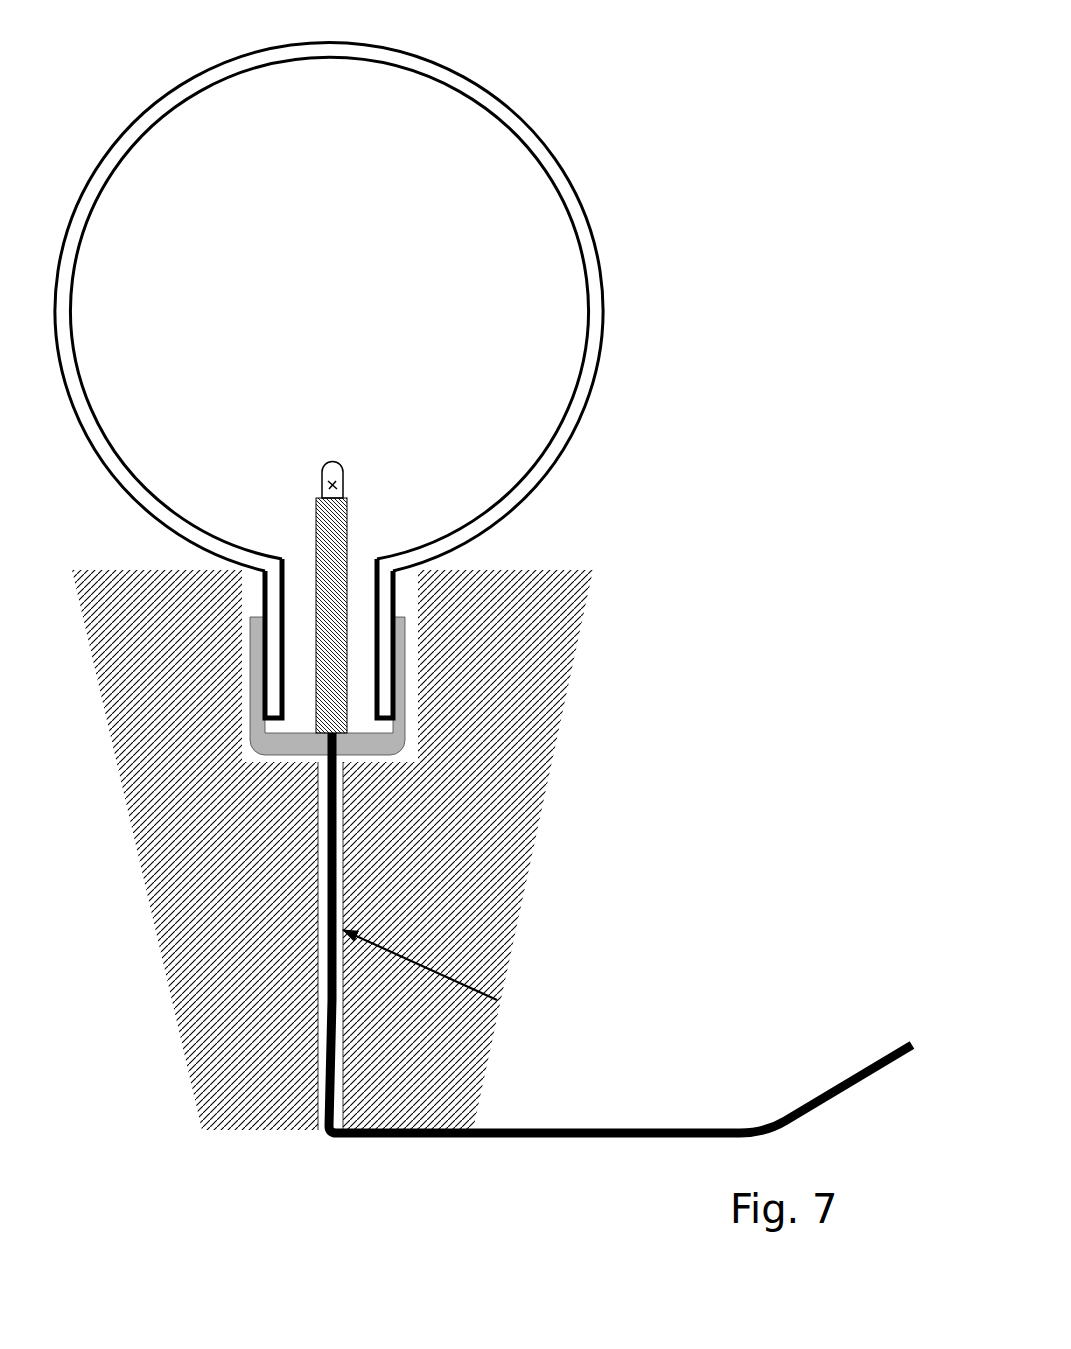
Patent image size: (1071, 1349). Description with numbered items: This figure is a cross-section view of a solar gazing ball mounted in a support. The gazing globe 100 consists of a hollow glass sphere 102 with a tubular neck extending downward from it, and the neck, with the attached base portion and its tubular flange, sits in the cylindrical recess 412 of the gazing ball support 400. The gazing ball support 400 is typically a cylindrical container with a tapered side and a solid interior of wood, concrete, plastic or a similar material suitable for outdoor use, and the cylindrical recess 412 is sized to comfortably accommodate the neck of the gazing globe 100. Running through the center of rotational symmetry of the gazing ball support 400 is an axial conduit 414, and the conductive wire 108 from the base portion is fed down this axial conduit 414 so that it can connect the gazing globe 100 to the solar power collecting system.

The gazing globe 100 is at (503, 64).
The hollow glass sphere 102 is at (558, 183).
The conductive wire 108 is at (769, 1094).
The gazing ball support 400 is at (516, 855).
The cylindrical recess 412 is at (250, 574).
The axial conduit 414 is at (316, 1094).